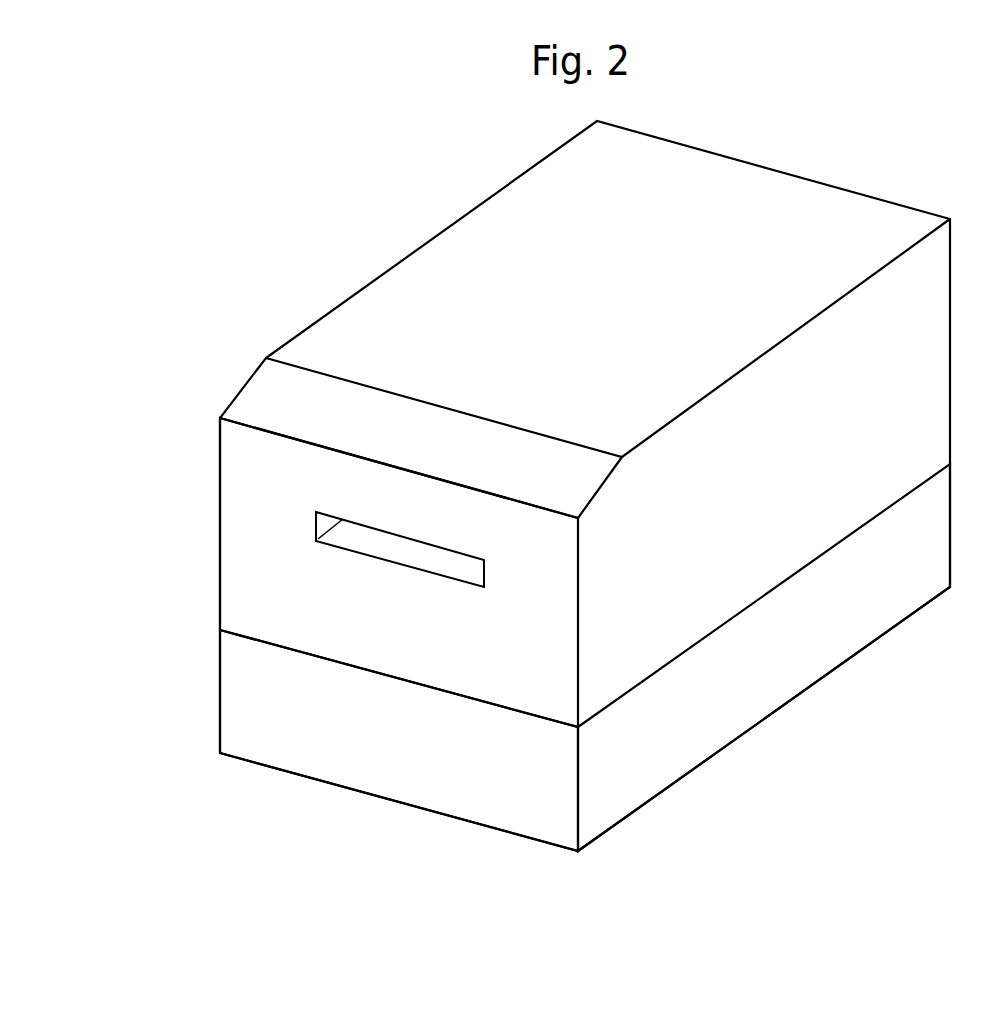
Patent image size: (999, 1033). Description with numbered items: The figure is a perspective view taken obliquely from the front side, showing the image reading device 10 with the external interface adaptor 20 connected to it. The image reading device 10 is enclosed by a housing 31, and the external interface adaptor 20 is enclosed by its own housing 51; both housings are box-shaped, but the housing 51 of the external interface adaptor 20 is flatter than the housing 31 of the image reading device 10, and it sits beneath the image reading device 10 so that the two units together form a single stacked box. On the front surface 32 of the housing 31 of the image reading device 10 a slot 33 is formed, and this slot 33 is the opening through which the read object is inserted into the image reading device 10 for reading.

The image reading device 10 is at (462, 203).
The external interface adaptor 20 is at (792, 710).
The housing 31 is at (376, 275).
The front surface 32 is at (243, 601).
The slot 33 is at (320, 537).
The housing 51 is at (220, 692).